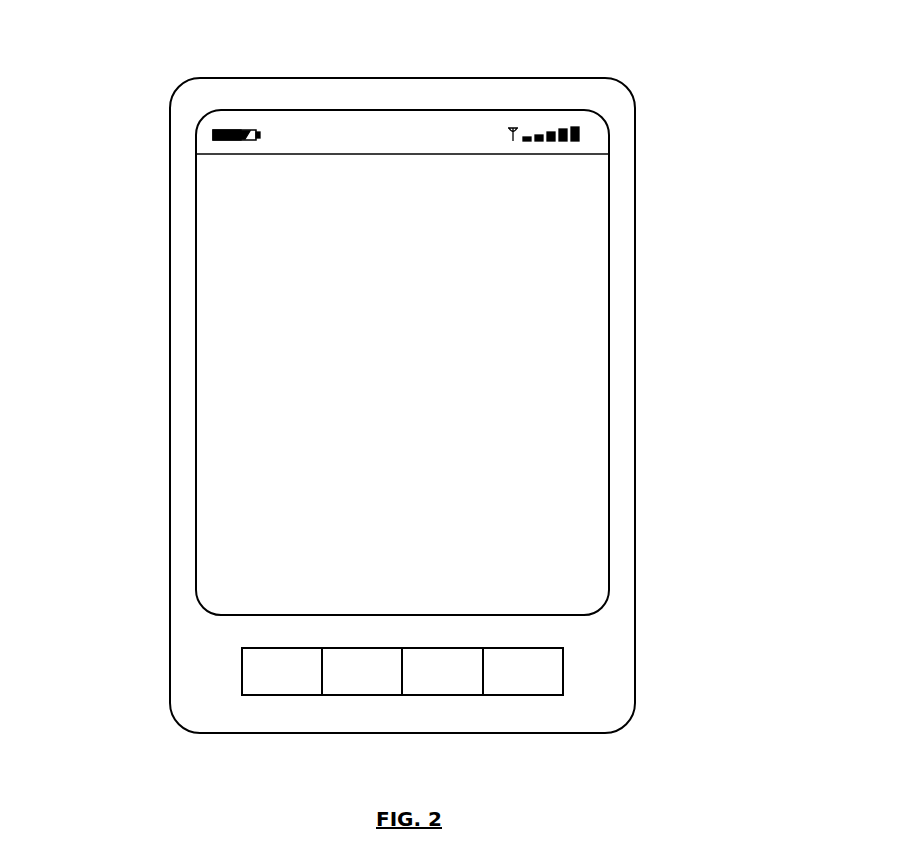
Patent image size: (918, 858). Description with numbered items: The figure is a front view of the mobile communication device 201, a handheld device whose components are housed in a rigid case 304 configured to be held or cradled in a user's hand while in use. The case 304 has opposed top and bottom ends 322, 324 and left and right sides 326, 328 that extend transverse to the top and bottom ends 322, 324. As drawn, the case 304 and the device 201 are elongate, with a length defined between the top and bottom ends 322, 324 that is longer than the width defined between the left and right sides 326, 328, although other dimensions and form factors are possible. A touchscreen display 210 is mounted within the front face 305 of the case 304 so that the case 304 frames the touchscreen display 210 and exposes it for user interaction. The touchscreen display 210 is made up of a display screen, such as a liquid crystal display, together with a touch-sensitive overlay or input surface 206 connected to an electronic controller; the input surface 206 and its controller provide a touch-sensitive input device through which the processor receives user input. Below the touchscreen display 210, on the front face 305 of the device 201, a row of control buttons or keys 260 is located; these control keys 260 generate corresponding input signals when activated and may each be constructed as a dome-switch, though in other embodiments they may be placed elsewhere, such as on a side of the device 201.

The mobile communication device 201 is at (645, 47).
The top end 322 is at (287, 78).
The rigid case 304 is at (512, 78).
The touch-sensitive overlay or input surface 206 is at (225, 340).
The touchscreen display 210 is at (192, 367).
The left side 326 is at (170, 500).
The front face 305 is at (188, 577).
The right side 328 is at (635, 652).
The bottom end 324 is at (578, 733).
The control buttons or keys 260 is at (242, 671).